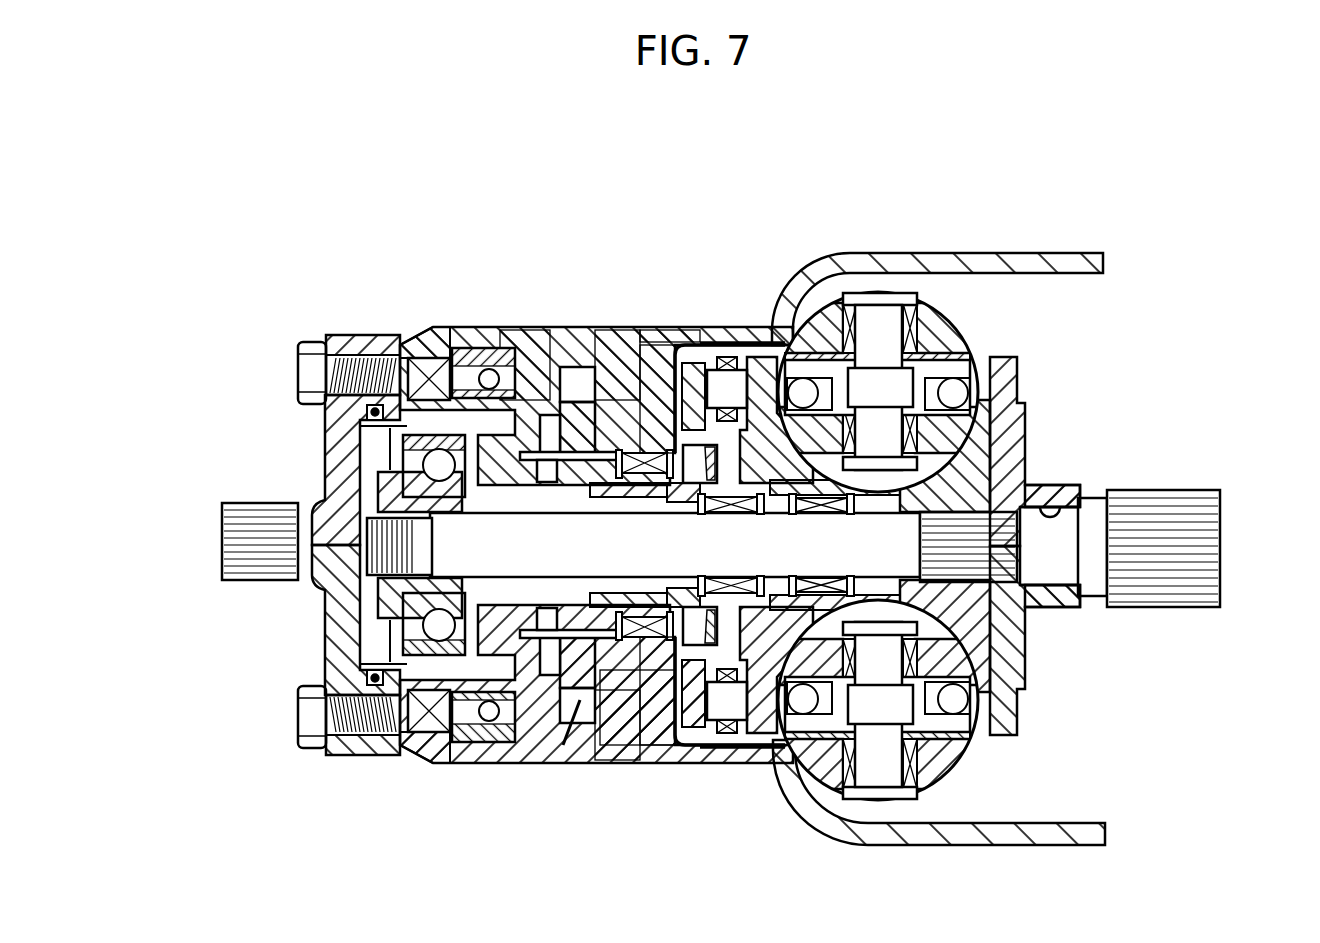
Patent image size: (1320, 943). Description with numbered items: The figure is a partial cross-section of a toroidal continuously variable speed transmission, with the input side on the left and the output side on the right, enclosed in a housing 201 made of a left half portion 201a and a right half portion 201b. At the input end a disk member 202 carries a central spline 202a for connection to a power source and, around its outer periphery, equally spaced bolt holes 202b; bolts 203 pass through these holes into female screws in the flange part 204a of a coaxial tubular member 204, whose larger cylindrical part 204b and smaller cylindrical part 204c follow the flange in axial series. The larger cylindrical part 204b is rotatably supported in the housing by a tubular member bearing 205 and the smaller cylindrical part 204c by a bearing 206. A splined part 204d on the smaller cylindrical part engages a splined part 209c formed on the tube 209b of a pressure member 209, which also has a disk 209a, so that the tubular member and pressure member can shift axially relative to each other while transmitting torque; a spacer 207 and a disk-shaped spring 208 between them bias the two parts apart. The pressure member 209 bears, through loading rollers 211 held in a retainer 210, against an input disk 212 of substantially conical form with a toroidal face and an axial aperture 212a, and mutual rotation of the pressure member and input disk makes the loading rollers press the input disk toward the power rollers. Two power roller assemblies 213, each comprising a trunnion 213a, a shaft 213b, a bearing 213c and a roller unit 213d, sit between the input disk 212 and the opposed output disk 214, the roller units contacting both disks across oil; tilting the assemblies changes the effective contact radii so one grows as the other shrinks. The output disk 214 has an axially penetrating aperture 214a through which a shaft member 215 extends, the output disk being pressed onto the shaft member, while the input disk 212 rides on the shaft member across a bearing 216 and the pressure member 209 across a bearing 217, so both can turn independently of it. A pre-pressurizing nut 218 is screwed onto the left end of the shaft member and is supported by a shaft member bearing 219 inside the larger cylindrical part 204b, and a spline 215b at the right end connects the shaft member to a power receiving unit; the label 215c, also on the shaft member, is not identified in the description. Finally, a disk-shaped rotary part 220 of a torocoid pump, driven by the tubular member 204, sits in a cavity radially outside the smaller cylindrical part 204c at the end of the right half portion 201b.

The housing 201 is at (827, 267).
The left half portion 201a is at (530, 340).
The right half portion 201b is at (660, 330).
The disk member 202 is at (335, 428).
The spline 202a is at (250, 510).
The bolt holes 202b is at (327, 337).
The bolts 203 is at (330, 752).
The tubular member 204 is at (383, 328).
The flange part 204a is at (370, 338).
The larger cylindrical part 204b is at (437, 340).
The smaller cylindrical part 204c is at (617, 340).
The splined part 204d is at (610, 497).
The tubular member bearing 205 is at (489, 330).
The bearing 206 is at (662, 348).
The spacer 207 is at (650, 740).
The disk-shaped spring 208 is at (690, 740).
The pressure member 209 is at (733, 343).
The disk 209a is at (740, 343).
The tube 209b is at (687, 500).
The splined part 209c is at (580, 767).
The retainer 210 is at (740, 352).
The loading rollers 211 is at (1013, 413).
The input disk 212 is at (757, 767).
The axial aperture 212a is at (867, 593).
The power roller assembly 213 is at (868, 320).
The trunnion 213a is at (940, 325).
The shaft 213b is at (833, 330).
The bearing 213c is at (827, 323).
The roller unit 213d is at (980, 425).
The output disk 214 is at (1045, 487).
The axially penetrating aperture 214a is at (1045, 511).
The shaft member 215 is at (1090, 530).
The spline 215b is at (1205, 500).
The shaft end spline 215c is at (413, 553).
The bearing 216 is at (817, 512).
The bearing 217 is at (730, 512).
The pre-pressurizing nut 218 is at (395, 752).
The shaft member bearing 219 is at (485, 483).
The rotary part 220 is at (577, 330).